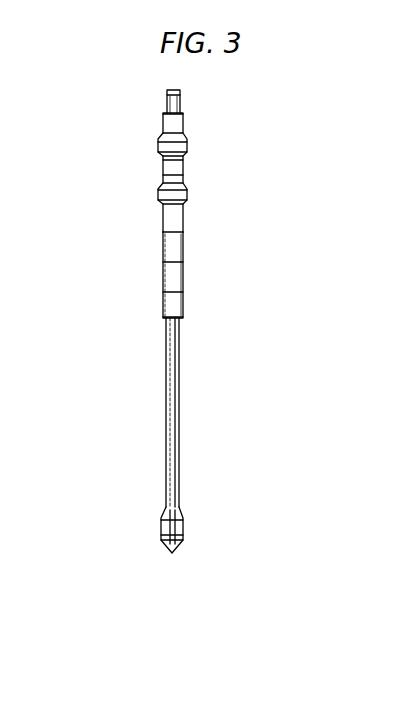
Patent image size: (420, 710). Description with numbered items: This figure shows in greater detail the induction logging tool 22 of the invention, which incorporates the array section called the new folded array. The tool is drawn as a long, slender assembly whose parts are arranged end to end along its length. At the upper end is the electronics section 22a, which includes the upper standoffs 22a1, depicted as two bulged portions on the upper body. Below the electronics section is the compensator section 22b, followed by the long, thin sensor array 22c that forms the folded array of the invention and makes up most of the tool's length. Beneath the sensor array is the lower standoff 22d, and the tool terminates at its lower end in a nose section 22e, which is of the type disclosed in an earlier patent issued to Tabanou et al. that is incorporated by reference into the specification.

The induction logging tool 22 is at (98, 338).
The electronics section 22a is at (163, 173).
The upper standoffs 22a1 is at (186, 197).
The compensator section 22b is at (182, 276).
The sensor array 22c is at (180, 407).
The lower standoff 22d is at (183, 527).
The nose section 22e is at (175, 552).